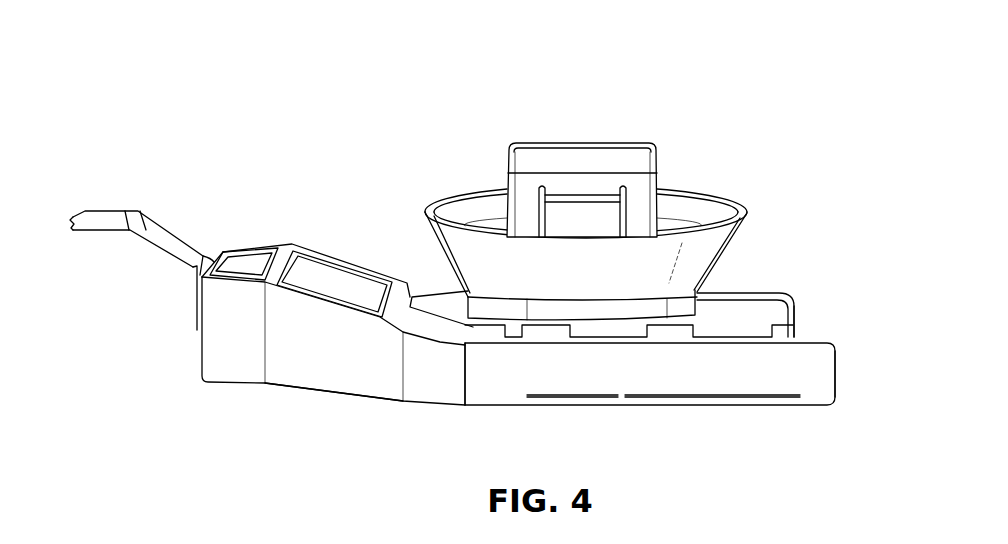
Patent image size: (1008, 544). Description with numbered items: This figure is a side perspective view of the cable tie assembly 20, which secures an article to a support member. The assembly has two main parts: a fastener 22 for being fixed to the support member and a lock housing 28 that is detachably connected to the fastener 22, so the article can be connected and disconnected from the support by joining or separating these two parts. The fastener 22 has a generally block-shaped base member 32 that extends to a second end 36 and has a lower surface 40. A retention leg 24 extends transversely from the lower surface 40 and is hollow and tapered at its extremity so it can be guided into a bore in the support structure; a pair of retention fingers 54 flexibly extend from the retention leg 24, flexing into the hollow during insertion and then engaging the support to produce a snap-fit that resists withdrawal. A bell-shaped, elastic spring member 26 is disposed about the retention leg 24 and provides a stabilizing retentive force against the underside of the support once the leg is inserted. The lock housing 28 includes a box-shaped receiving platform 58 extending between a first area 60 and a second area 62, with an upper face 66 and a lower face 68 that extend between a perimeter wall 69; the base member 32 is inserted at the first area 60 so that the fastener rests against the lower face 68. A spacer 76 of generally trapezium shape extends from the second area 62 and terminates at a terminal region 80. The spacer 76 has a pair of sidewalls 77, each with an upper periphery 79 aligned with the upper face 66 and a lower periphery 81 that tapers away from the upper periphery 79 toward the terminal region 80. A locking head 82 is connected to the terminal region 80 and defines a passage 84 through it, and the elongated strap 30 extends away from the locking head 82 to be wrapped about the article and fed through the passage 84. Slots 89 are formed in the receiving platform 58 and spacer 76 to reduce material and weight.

The cable tie assembly 20 is at (723, 126).
The fastener 22 is at (751, 304).
The retention leg 24 is at (640, 191).
The spring member 26 is at (716, 248).
The lock housing 28 is at (784, 405).
The elongated strap 30 is at (107, 213).
The base member 32 is at (773, 300).
The second end 36 is at (773, 323).
The lower surface 40 is at (433, 305).
The retention fingers 54 is at (585, 214).
The receiving platform 58 is at (597, 340).
The first area 60 is at (828, 345).
The second area 62 is at (478, 334).
The upper face 66 is at (686, 408).
The lower face 68 is at (738, 330).
The perimeter wall 69 is at (660, 373).
The spacer 76 is at (303, 377).
The sidewalls 77 is at (287, 351).
The upper periphery 79 is at (338, 393).
The terminal region 80 is at (265, 328).
The lower periphery 81 is at (323, 252).
The locking head 82 is at (245, 247).
The passage 84 is at (250, 272).
The slots 89 is at (351, 283).